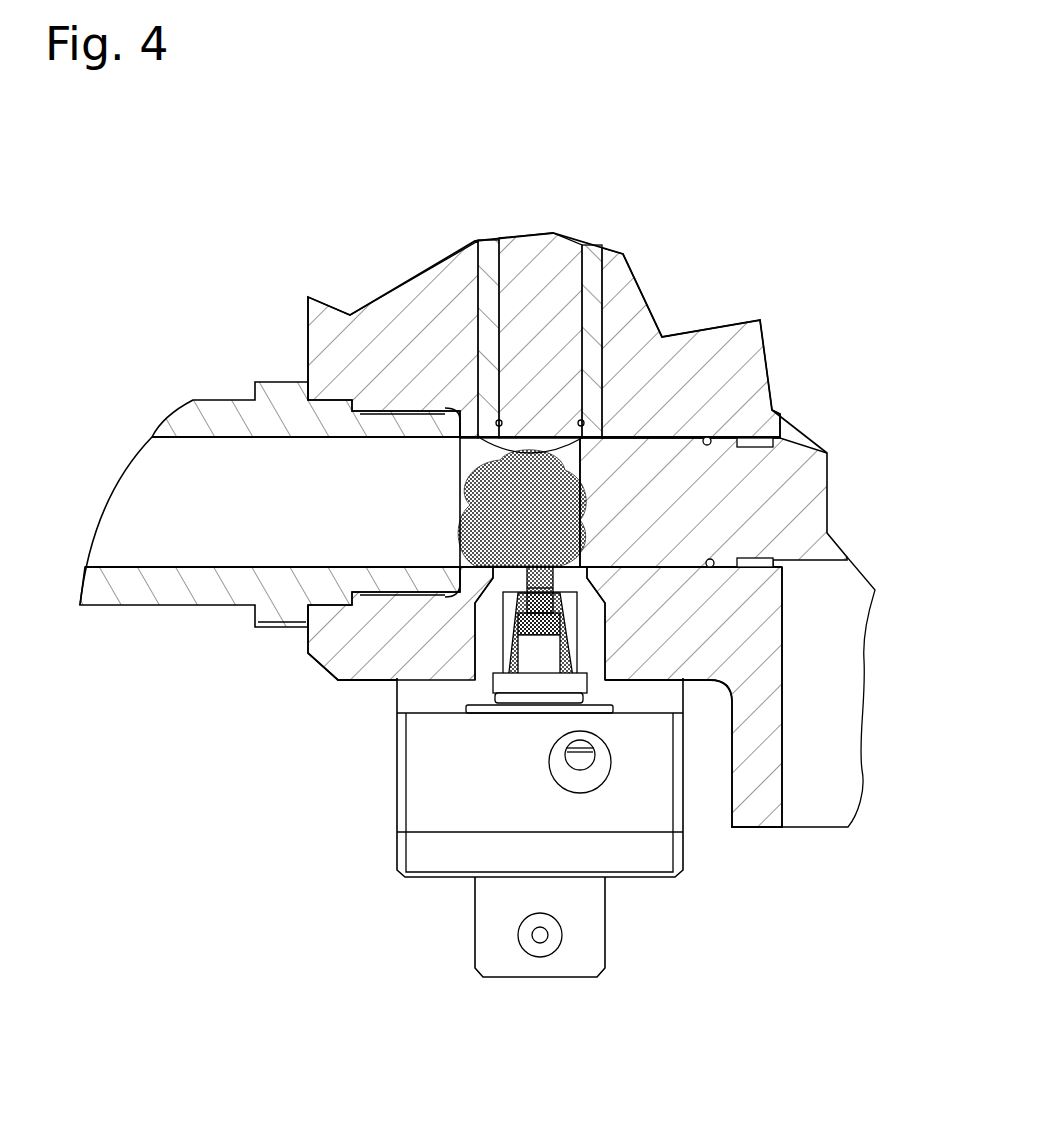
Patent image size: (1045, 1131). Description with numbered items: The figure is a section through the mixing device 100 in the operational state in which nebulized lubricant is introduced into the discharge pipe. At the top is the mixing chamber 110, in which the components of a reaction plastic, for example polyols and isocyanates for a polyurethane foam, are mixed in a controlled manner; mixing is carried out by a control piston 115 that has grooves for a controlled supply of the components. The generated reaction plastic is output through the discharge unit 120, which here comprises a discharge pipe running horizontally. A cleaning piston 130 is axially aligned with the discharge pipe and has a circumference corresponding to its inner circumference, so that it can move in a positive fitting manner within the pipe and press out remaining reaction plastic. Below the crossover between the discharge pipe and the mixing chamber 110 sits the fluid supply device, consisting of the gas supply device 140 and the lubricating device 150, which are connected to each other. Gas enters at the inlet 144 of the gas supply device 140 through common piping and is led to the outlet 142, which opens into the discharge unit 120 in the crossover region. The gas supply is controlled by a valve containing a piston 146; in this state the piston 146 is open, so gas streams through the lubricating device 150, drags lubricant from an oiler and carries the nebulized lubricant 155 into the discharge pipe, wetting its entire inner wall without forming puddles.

The mixing device 100 is at (811, 141).
The mixing chamber 110 is at (498, 258).
The control piston 115 is at (528, 250).
The discharge unit 120 is at (147, 482).
The cleaning piston 130 is at (808, 506).
The gas supply device 140 is at (405, 800).
The outlet 142 is at (537, 593).
The inlet 144 is at (590, 748).
The piston 146 is at (525, 658).
The lubricating device 150 is at (537, 848).
The nebulized lubricant 155 is at (500, 505).